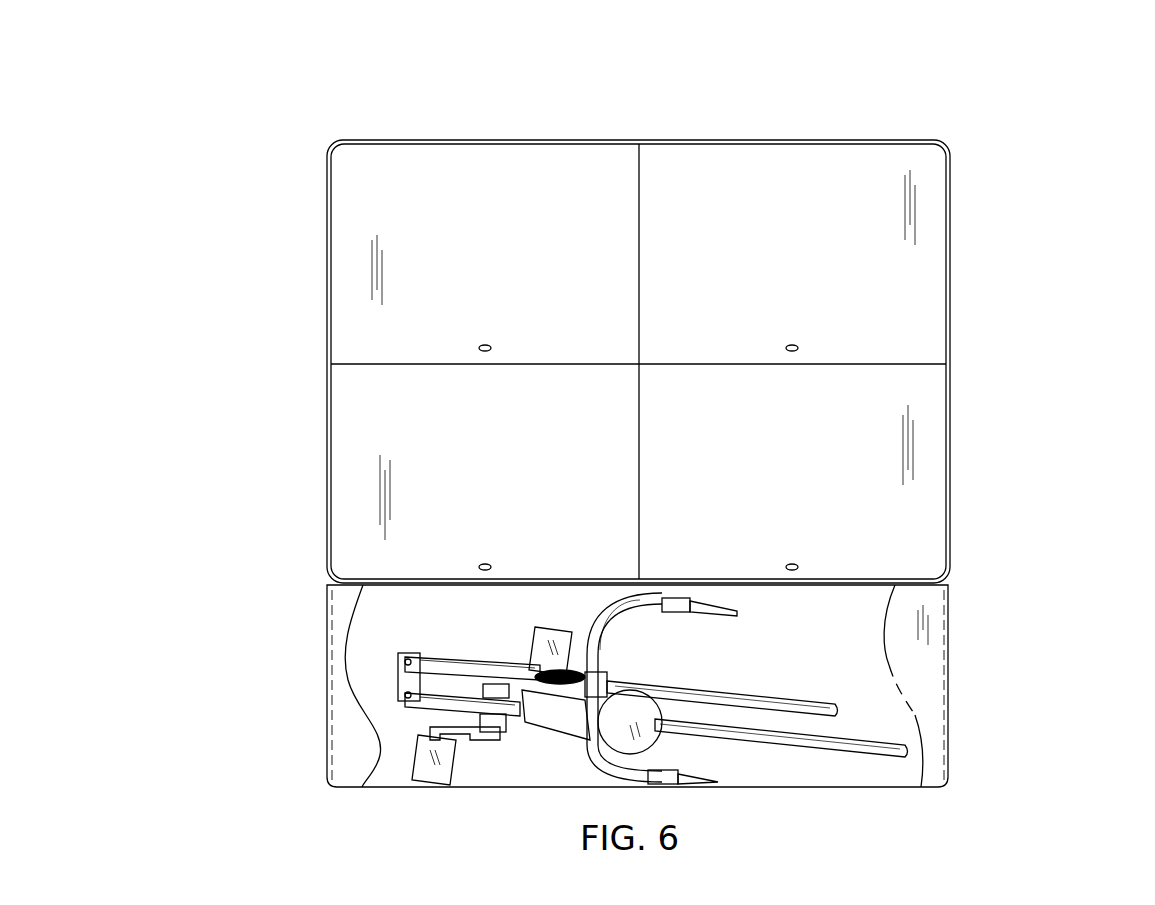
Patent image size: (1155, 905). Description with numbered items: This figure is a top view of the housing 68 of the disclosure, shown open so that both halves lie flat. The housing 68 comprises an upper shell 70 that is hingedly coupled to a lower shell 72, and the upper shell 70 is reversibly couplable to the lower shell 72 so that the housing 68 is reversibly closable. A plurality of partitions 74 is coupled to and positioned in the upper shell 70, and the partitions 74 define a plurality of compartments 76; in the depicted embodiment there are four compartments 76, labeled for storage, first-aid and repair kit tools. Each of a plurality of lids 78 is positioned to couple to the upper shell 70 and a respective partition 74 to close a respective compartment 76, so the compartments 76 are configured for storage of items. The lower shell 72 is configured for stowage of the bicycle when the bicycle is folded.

The housing 68 is at (1052, 180).
The upper shell 70 is at (950, 308).
The lower shell 72 is at (957, 645).
The partitions 74 is at (642, 481).
The compartments 76 is at (782, 193).
The lids 78 is at (708, 317).